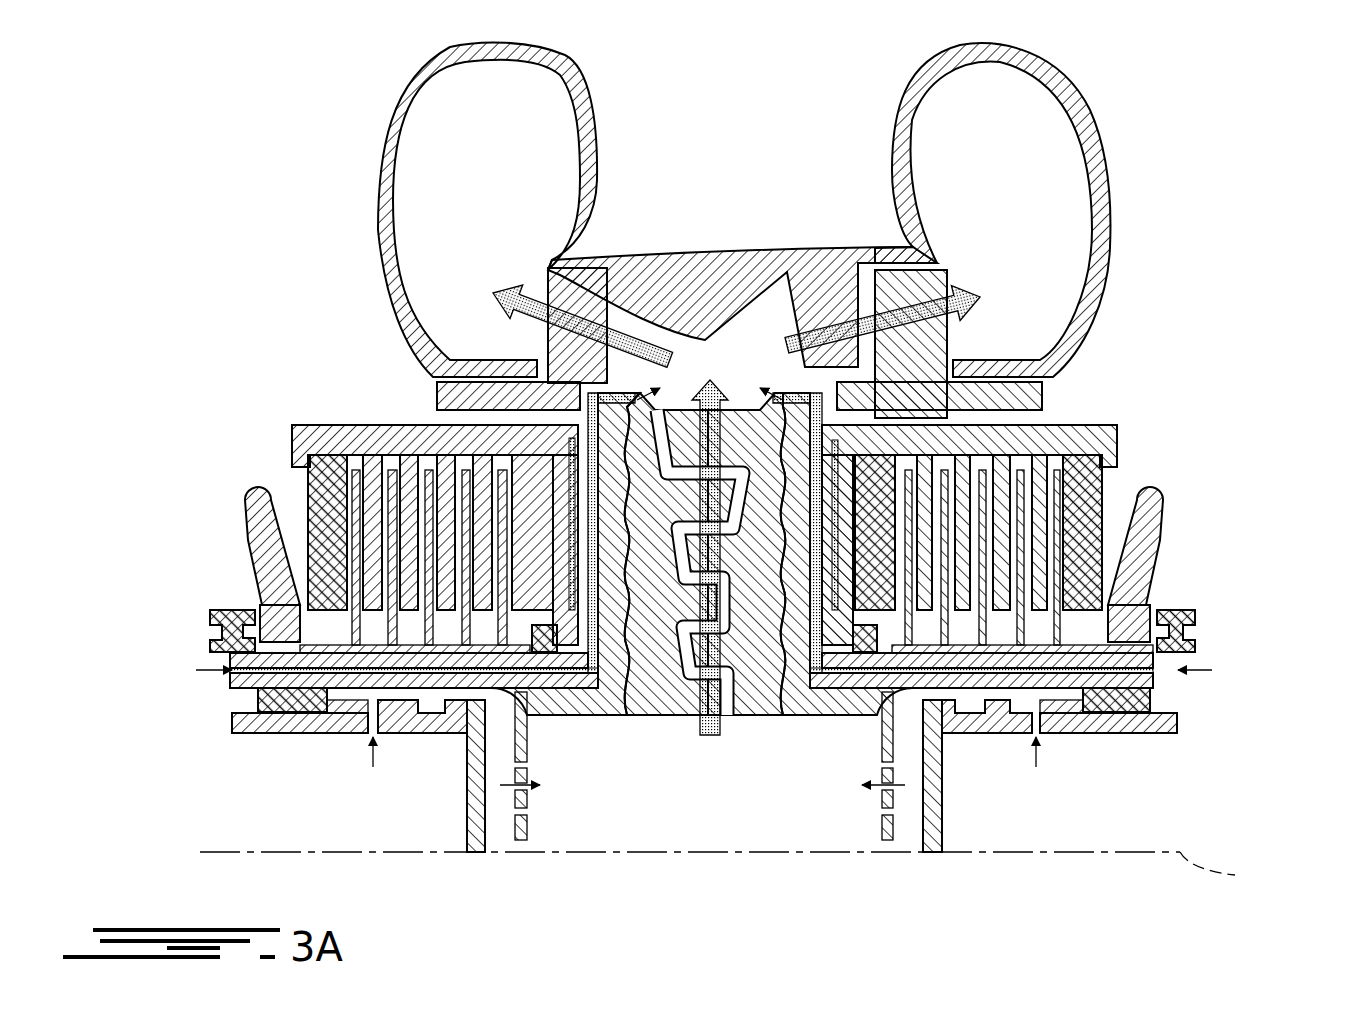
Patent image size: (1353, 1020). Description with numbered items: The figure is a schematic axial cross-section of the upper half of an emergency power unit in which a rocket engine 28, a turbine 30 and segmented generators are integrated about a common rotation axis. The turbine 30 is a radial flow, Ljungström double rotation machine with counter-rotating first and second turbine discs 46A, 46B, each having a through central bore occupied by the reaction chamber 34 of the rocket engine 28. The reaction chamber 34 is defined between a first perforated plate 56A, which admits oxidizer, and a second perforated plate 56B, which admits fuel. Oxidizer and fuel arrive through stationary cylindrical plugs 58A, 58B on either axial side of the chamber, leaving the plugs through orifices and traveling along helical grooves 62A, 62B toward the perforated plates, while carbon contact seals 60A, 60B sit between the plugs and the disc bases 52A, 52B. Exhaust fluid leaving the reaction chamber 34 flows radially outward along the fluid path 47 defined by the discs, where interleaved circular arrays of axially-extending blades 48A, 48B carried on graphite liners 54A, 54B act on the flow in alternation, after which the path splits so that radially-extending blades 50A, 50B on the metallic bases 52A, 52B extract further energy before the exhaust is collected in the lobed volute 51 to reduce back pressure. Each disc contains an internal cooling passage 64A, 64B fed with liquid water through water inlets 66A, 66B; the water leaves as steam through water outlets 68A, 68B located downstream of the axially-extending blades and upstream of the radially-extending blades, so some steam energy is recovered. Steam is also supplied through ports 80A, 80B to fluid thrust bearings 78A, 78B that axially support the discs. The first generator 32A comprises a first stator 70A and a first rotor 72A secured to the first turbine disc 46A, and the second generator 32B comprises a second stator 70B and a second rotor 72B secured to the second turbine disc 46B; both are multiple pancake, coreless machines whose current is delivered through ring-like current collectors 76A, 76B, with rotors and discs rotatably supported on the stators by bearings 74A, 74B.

The rocket engine 28 is at (702, 791).
The turbine 30 is at (365, 355).
The first generator 32A is at (332, 616).
The second generator 32B is at (1074, 616).
The reaction chamber 34 is at (703, 785).
The first turbine disc 46A is at (622, 730).
The second turbine disc 46B is at (802, 730).
The fluid path 47 is at (720, 400).
The axially-extending blades 48A is at (678, 700).
The axially-extending blades 48B is at (745, 700).
The radially-extending blades 50A is at (578, 292).
The radially-extending blades 50B is at (905, 300).
The volute 51 is at (1015, 120).
The base 52A is at (585, 715).
The base 52B is at (836, 715).
The liner 54A is at (657, 685).
The liner 54B is at (762, 685).
The first perforated plate 56A is at (521, 810).
The second perforated plate 56B is at (888, 810).
The first plug 58A is at (300, 735).
The second plug 58B is at (1085, 735).
The first seal 60A is at (262, 698).
The second seal 60B is at (1148, 698).
The first groove 62A is at (310, 722).
The second groove 62B is at (1100, 722).
The cooling passage 64A is at (445, 655).
The cooling passage 64B is at (950, 700).
The water inlet 66A is at (235, 666).
The water inlet 66B is at (1160, 666).
The water outlet 68A is at (595, 400).
The water outlet 68B is at (815, 400).
The first stator 70A is at (295, 440).
The second stator 70B is at (1115, 440).
The first rotor 72A is at (300, 622).
The second rotor 72B is at (1110, 622).
The first bearings 74A is at (215, 625).
The second bearings 74B is at (1193, 625).
The current collector 76A is at (258, 542).
The current collector 76B is at (1150, 542).
The first thrust bearing 78A is at (572, 497).
The second thrust bearing 78B is at (838, 497).
The port 80A is at (582, 520).
The port 80B is at (835, 520).